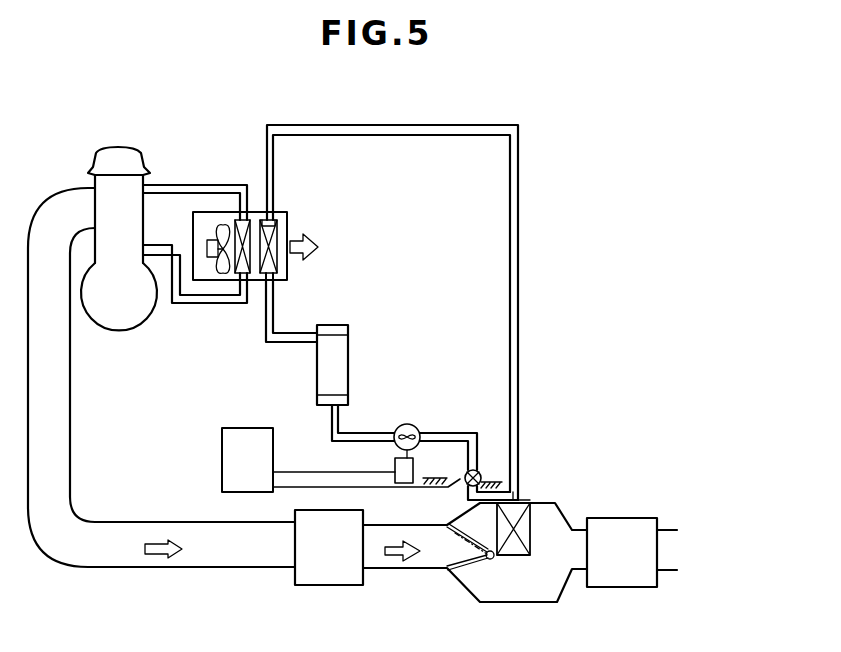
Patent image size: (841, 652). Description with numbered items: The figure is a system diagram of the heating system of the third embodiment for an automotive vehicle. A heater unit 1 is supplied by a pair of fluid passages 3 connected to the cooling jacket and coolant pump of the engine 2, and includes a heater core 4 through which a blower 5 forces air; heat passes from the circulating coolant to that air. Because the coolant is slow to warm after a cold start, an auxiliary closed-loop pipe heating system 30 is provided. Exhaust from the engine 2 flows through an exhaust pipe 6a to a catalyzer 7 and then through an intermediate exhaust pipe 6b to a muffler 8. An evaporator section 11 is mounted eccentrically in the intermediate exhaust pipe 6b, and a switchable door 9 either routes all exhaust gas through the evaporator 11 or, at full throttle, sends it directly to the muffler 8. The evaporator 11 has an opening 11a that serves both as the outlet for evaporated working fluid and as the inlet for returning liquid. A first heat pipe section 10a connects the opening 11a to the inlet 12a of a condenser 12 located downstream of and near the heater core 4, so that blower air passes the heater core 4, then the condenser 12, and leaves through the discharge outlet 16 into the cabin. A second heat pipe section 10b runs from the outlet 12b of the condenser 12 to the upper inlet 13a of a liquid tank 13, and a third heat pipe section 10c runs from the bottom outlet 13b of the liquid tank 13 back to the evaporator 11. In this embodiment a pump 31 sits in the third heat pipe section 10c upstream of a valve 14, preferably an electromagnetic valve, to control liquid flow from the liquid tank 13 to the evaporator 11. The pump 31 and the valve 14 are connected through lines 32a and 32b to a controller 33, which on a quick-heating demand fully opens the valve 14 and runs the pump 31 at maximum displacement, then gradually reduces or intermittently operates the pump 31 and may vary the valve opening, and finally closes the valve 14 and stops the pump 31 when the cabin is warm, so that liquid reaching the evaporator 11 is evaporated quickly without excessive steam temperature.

The heater unit 1 is at (226, 193).
The engine 2 is at (122, 332).
The fluid passages 3 is at (171, 184).
The heater core 4 is at (246, 226).
The blower 5 is at (225, 270).
The exhaust pipe 6a is at (70, 470).
The intermediate exhaust pipe 6b is at (395, 569).
The catalyzer 7 is at (334, 586).
The muffler 8 is at (630, 578).
The switchable door 9 is at (465, 568).
The first heat pipe section 10a is at (518, 197).
The second heat pipe section 10b is at (273, 318).
The third heat pipe section 10c is at (368, 434).
The evaporator section 11 is at (540, 506).
The opening 11a is at (514, 501).
The condenser 12 is at (290, 258).
The inlet 12a is at (273, 222).
The outlet 12b is at (268, 279).
The liquid tank 13 is at (361, 358).
The upper inlet 13a is at (335, 336).
The bottom outlet 13b is at (338, 405).
The valve 14 is at (482, 470).
The discharge outlet 16 is at (290, 268).
The closed-loop pipe heating system 30 is at (428, 312).
The pump 31 is at (428, 419).
The line 32a is at (305, 463).
The line 32b is at (290, 490).
The controller 33 is at (222, 476).